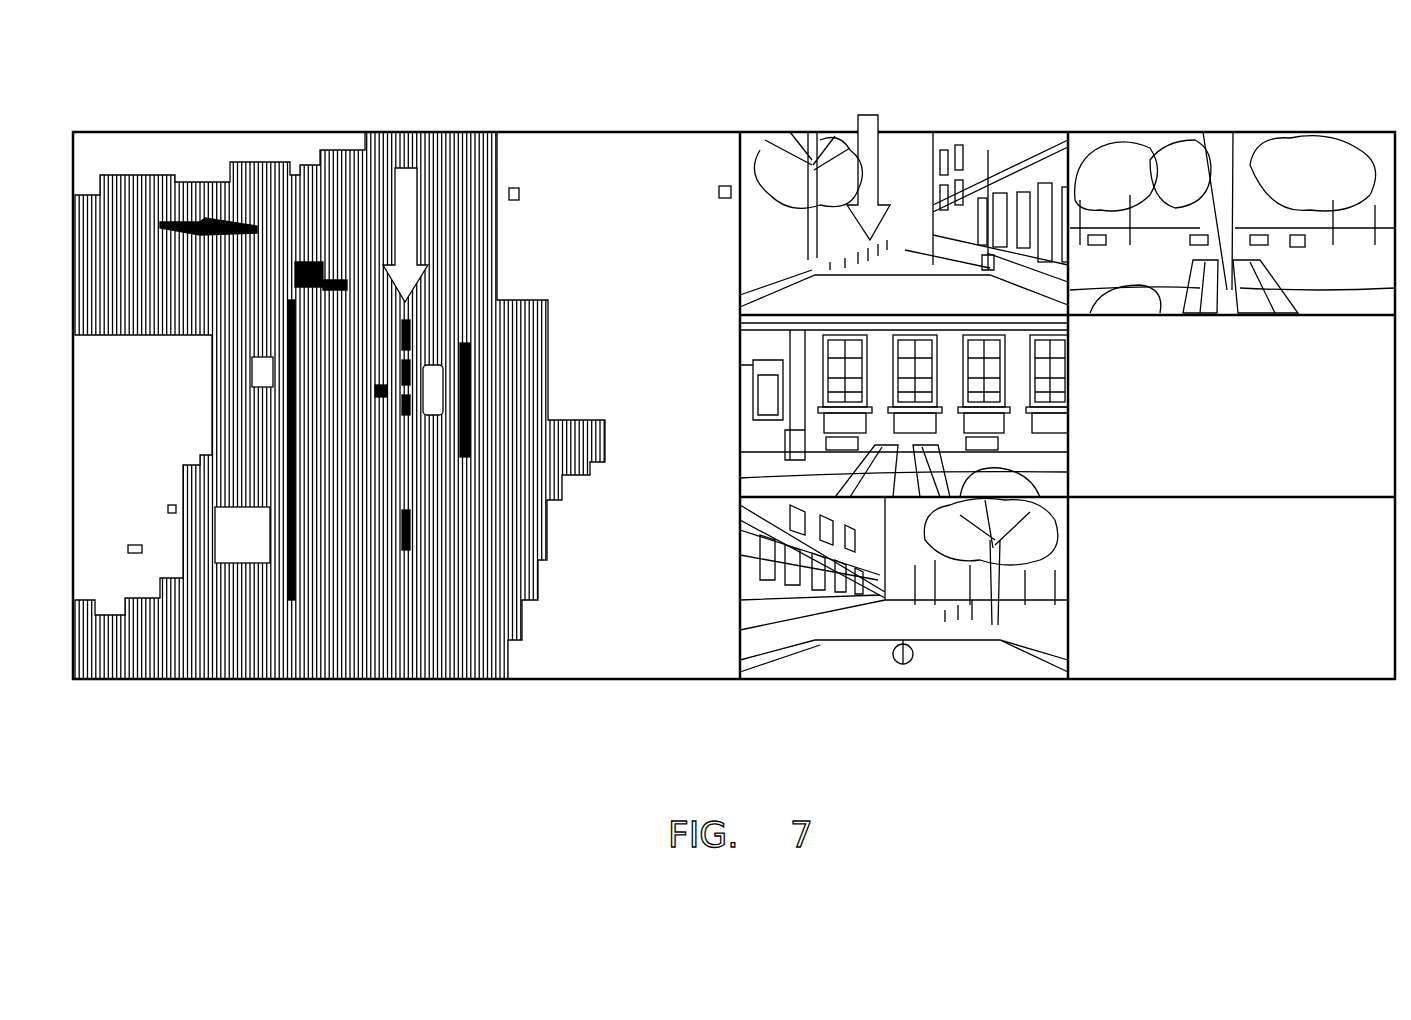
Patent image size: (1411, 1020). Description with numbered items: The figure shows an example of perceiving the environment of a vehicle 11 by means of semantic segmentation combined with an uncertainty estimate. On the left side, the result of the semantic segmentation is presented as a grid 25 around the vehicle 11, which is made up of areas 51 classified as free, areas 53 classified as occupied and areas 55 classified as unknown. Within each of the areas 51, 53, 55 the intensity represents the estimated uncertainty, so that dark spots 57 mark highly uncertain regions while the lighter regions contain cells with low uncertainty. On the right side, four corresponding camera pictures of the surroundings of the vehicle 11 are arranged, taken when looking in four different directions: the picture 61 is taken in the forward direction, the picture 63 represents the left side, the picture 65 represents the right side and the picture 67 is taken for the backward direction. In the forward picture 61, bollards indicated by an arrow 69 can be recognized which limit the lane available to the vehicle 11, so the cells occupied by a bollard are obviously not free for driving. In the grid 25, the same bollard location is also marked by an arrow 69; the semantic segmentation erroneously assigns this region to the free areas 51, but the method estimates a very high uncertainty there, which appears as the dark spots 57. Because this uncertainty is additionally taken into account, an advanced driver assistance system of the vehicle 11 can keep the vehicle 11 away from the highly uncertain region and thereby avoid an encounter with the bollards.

The vehicle 11 is at (456, 376).
The grid 25 is at (666, 176).
The areas classified as free 51 is at (374, 523).
The areas classified as occupied 53 is at (281, 210).
The areas classified as unknown 55 is at (143, 390).
The dark spots 57 is at (390, 368).
The forward picture 61 is at (923, 152).
The left side picture 63 is at (1278, 157).
The right side picture 65 is at (1020, 421).
The backward picture 67 is at (830, 655).
The arrow 69 is at (412, 165).